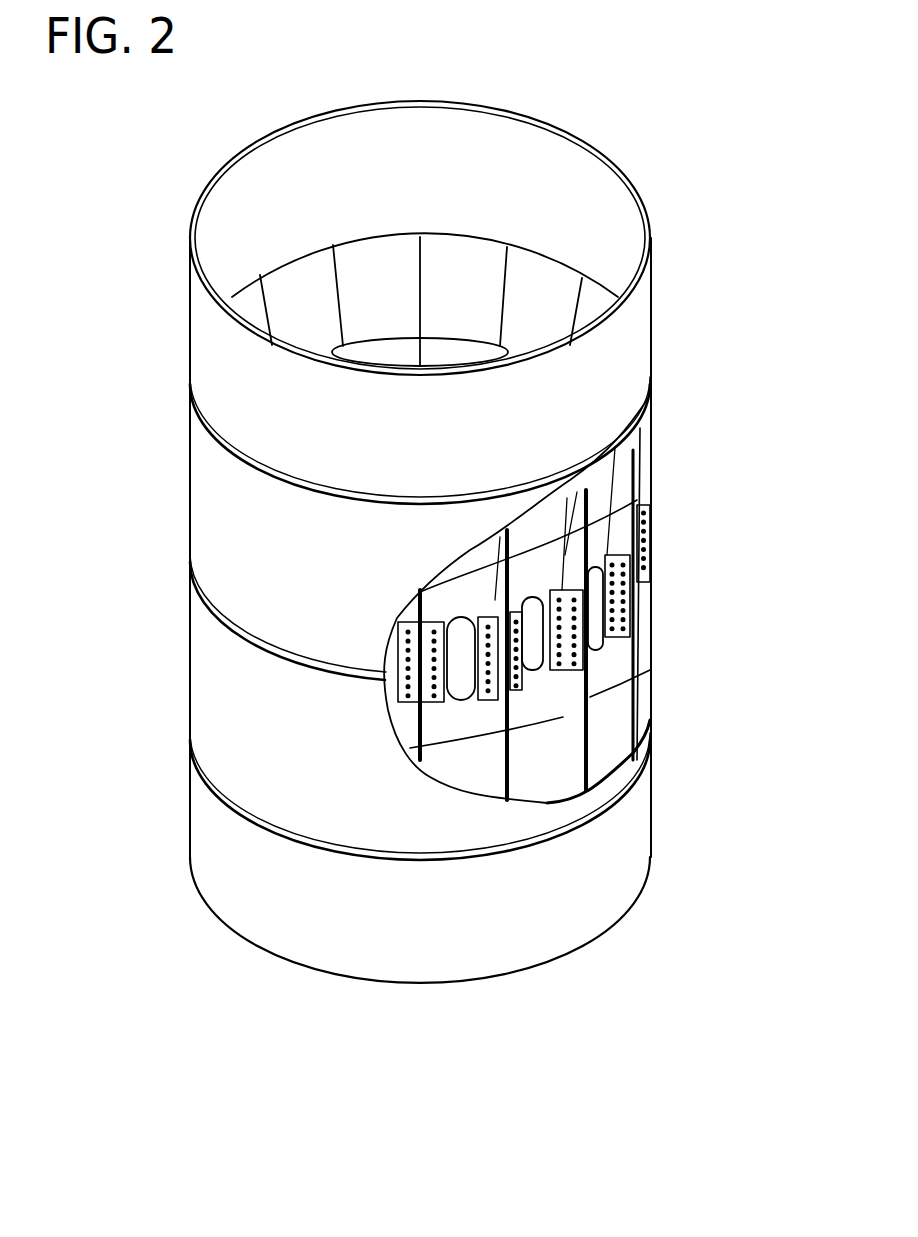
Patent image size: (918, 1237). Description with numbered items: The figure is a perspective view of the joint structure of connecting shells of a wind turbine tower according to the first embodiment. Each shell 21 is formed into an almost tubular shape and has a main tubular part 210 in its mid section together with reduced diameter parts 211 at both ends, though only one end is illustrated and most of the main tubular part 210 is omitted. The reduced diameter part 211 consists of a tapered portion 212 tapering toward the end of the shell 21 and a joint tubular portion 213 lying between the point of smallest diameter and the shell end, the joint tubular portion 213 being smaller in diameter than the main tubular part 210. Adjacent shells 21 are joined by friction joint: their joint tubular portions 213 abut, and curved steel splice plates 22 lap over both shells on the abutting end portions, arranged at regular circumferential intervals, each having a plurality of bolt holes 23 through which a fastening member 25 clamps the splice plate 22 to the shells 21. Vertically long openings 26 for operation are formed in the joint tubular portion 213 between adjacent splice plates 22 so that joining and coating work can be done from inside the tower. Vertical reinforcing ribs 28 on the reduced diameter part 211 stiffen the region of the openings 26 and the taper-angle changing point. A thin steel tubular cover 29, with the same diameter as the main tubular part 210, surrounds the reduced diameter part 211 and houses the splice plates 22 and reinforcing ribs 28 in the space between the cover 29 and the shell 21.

The shell 21 is at (650, 228).
The main tubular part 210 is at (635, 340).
The tubular cover 29 is at (198, 488).
The reinforcing rib 28 is at (623, 505).
The reduced diameter part 211 is at (757, 655).
The tapered portion 212 is at (603, 733).
The joint tubular portion 213 is at (600, 668).
The splice plate 22 is at (505, 700).
The bolt hole 23 is at (480, 693).
The fastening member 25 is at (492, 700).
The opening for operation 26 is at (452, 703).